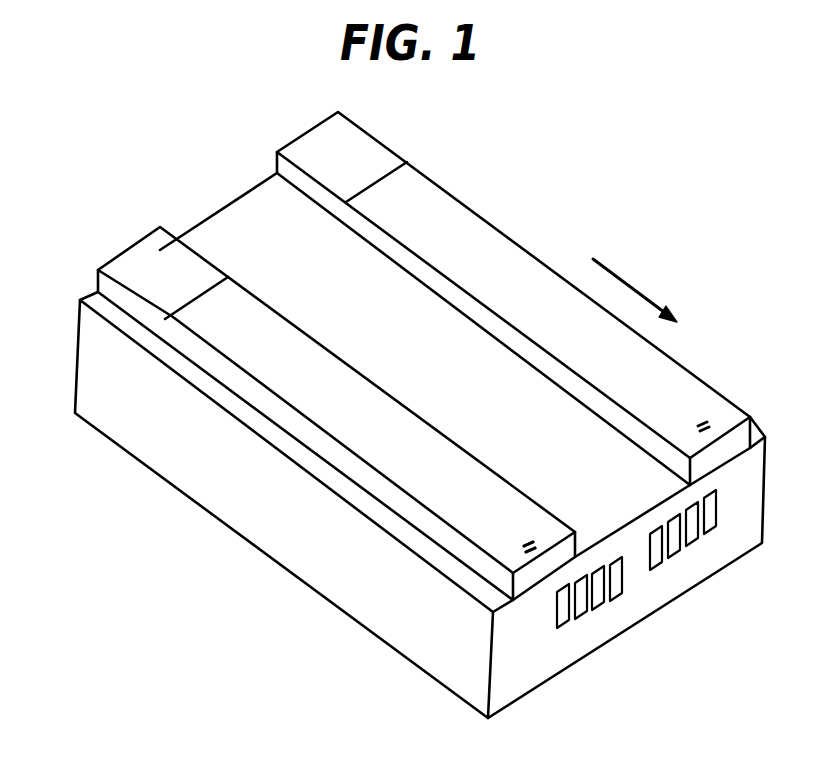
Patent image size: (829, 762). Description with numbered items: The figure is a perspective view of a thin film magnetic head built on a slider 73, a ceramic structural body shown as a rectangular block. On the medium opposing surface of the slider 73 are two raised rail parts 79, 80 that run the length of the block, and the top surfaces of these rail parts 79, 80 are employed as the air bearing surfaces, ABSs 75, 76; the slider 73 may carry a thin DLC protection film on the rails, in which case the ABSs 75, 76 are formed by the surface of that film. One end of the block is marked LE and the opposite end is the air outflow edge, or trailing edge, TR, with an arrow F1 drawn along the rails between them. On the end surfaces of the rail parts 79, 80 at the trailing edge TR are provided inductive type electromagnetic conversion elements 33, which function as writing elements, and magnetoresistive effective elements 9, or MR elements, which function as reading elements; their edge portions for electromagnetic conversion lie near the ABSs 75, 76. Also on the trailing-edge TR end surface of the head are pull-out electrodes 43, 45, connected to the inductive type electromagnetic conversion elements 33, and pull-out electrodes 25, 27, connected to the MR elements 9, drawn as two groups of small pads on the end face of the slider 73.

The magnetoresistive effective element 9 is at (527, 543).
The pull-out electrode 25 is at (562, 630).
The pull-out electrode 27 is at (593, 587).
The inductive type electromagnetic conversion element 33 is at (530, 545).
The pull-out electrode 43 is at (603, 602).
The pull-out electrode 45 is at (622, 588).
The slider 73 is at (202, 492).
The ABS 75 is at (247, 307).
The ABS 76 is at (500, 257).
The rail part 79 is at (120, 297).
The rail part 80 is at (290, 195).
The leading edge LE is at (127, 247).
The air outflow edge (trailing edge) TR is at (703, 565).
The direction arrow F1 is at (604, 268).